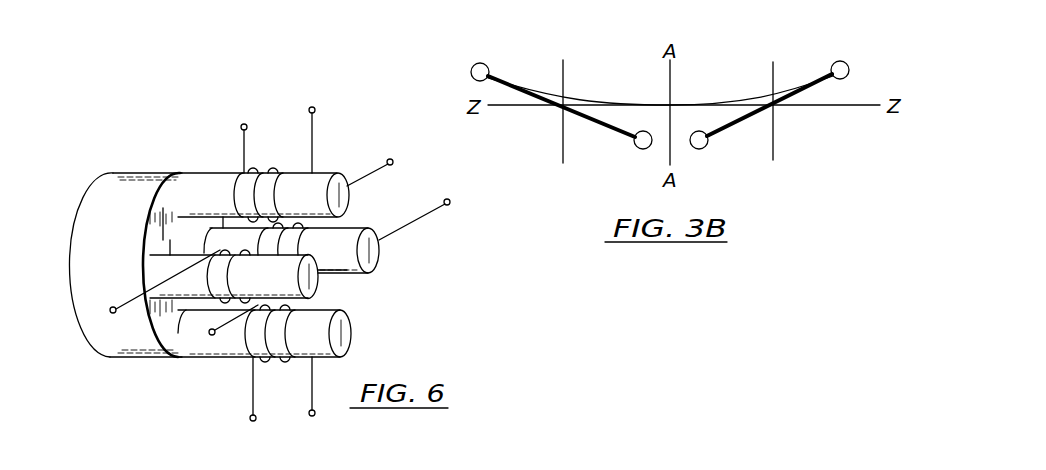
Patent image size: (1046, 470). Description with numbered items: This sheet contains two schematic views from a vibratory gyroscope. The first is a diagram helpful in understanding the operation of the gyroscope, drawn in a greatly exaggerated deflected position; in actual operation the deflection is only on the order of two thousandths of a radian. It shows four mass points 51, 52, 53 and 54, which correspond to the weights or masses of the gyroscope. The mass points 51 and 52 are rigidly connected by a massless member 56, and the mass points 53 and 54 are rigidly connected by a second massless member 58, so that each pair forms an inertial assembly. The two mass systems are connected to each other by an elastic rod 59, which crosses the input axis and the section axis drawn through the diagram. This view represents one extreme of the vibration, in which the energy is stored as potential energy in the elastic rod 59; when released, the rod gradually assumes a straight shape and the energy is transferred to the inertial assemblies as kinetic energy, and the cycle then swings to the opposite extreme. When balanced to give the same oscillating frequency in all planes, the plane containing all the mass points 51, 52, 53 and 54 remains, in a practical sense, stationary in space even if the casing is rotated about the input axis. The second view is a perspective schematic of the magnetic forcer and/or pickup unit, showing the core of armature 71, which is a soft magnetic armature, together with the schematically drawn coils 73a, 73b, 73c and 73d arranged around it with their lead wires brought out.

In FIG. 3B, the mass point 51 is at (474, 63).
In FIG. 3B, the mass point 52 is at (633, 141).
In FIG. 3B, the mass point 53 is at (710, 144).
In FIG. 3B, the mass point 54 is at (847, 63).
In FIG. 3B, the massless member 56 is at (548, 100).
In FIG. 3B, the massless member 58 is at (772, 108).
In FIG. 3B, the elastic rod 59 is at (741, 100).
In FIG. 6, the core of armature 71 is at (135, 171).
In FIG. 6, the coil 73a is at (217, 271).
In FIG. 6, the coil 73b is at (268, 172).
In FIG. 6, the coil 73c is at (330, 226).
In FIG. 6, the coil 73d is at (278, 360).